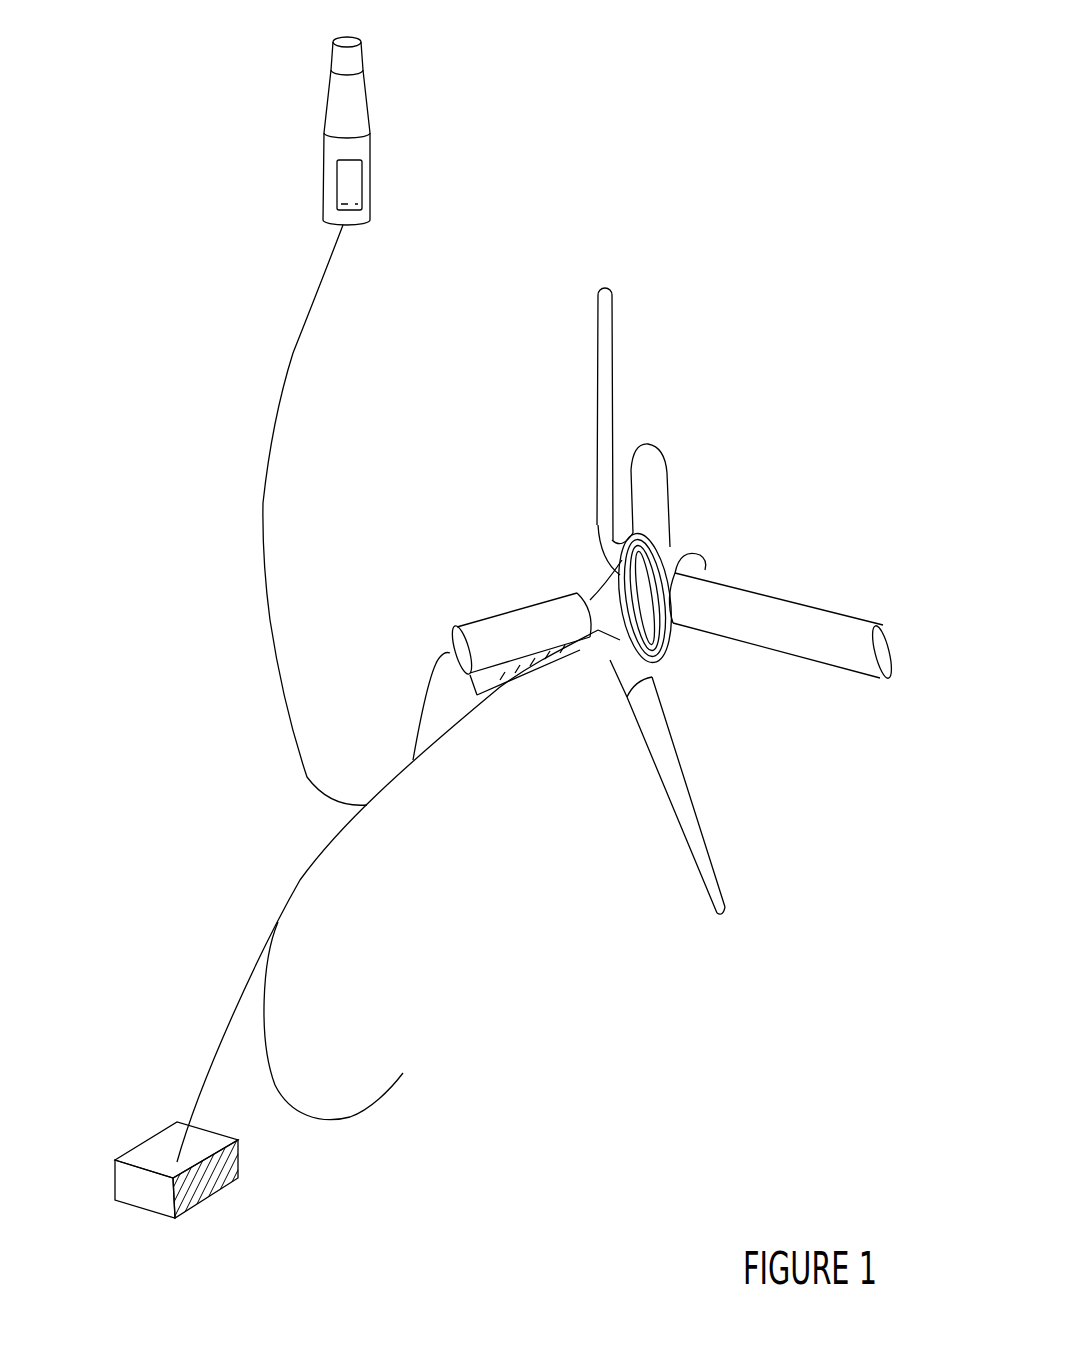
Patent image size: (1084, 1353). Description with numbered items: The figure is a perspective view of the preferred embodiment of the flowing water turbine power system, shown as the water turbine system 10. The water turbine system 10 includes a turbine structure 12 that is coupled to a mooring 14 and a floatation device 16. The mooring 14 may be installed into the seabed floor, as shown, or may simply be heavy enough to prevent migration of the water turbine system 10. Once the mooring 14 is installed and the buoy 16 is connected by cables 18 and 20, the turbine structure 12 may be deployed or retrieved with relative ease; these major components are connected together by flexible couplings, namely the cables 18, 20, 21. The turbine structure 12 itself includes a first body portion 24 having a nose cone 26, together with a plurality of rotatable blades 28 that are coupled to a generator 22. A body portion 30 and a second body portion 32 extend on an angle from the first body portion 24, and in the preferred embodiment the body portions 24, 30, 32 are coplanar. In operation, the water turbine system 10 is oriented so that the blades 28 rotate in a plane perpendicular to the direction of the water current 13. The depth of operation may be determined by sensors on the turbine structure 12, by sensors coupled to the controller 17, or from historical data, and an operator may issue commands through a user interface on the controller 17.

The water turbine system 10 is at (188, 410).
The turbine structure 12 is at (760, 466).
The water current 13 is at (196, 759).
The mooring 14 is at (218, 1192).
The floatation device 16 is at (367, 103).
The controller 17 is at (338, 181).
The cable 18 is at (262, 560).
The cable 20 is at (303, 883).
The cable 21 is at (265, 1047).
The generator 22 is at (660, 650).
The first body portion 24 is at (555, 551).
The nose cone 26 is at (453, 633).
The rotatable blades 28 is at (705, 862).
The body portion 30 is at (663, 477).
The second body portion 32 is at (842, 612).